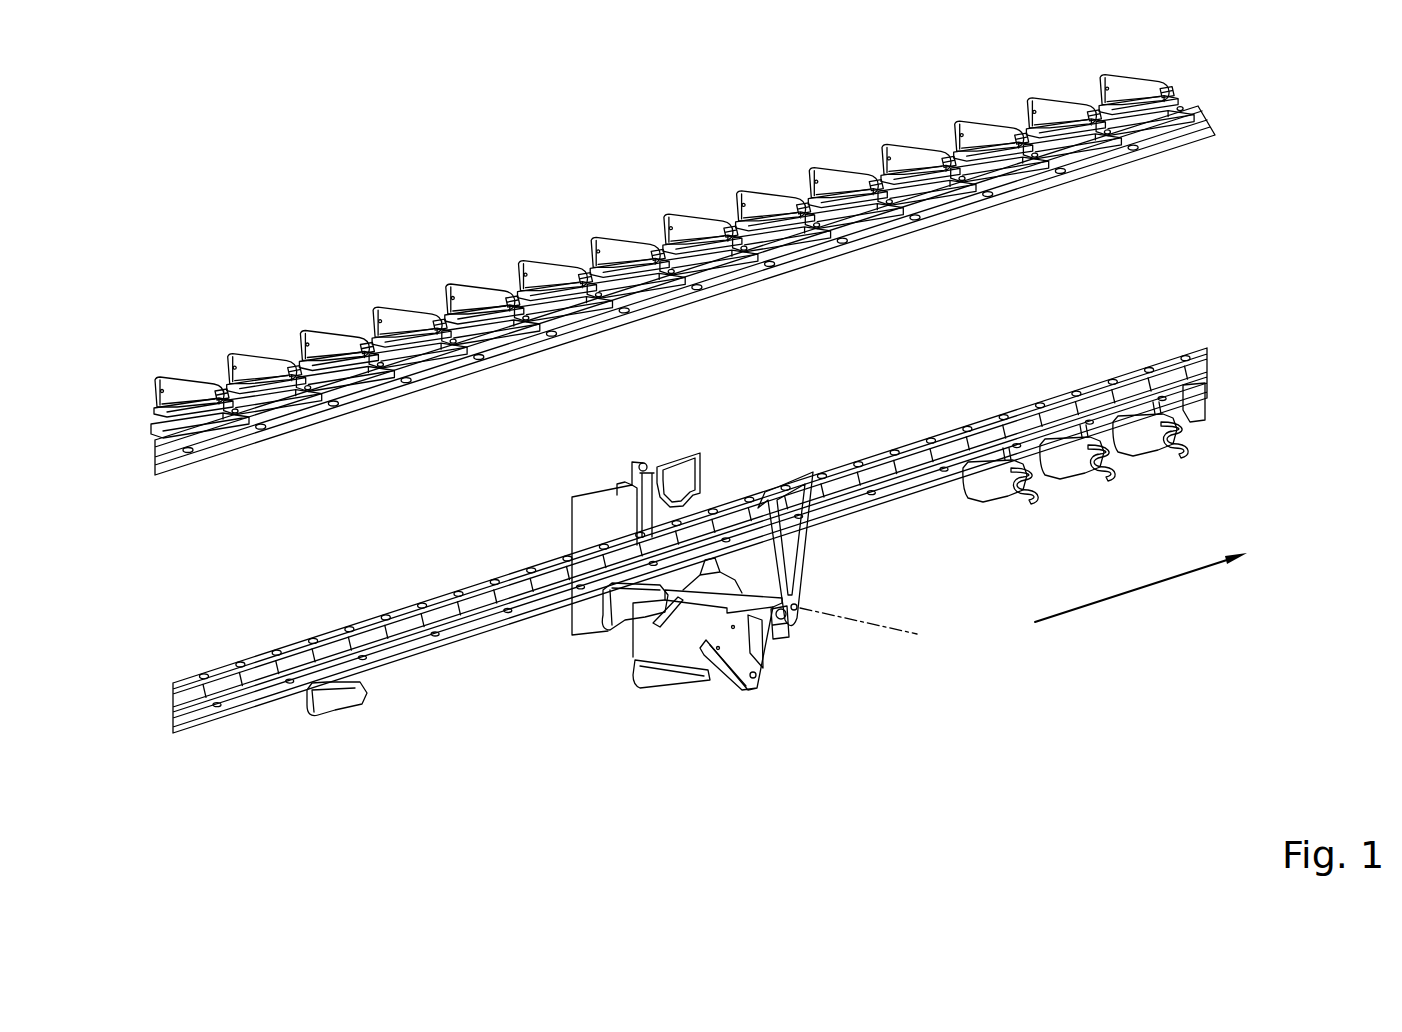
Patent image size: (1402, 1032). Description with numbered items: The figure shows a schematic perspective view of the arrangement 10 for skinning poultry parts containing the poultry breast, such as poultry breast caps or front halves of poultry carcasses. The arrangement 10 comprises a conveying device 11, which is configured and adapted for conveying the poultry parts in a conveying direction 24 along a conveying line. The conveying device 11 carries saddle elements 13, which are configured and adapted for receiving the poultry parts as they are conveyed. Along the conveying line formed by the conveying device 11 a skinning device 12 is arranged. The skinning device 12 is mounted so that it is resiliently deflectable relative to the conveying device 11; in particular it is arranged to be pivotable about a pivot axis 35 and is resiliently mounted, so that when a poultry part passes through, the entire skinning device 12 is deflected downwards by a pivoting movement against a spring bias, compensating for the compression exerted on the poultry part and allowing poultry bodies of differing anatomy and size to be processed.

The arrangement 10 is at (432, 157).
The conveying device 11 is at (722, 294).
The skinning device 12 is at (781, 714).
The saddle elements 13 is at (632, 245).
The conveying direction 24 is at (1137, 590).
The pivot axis 35 is at (903, 636).